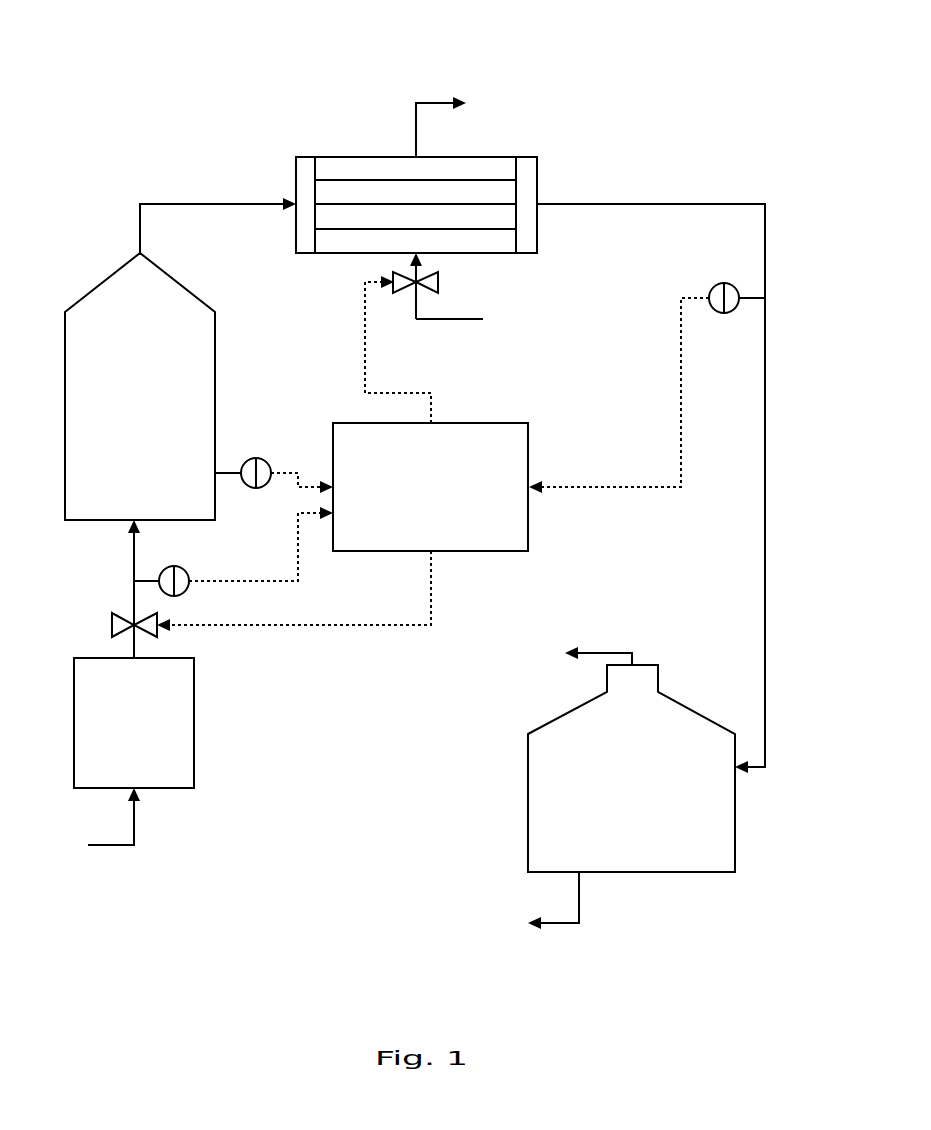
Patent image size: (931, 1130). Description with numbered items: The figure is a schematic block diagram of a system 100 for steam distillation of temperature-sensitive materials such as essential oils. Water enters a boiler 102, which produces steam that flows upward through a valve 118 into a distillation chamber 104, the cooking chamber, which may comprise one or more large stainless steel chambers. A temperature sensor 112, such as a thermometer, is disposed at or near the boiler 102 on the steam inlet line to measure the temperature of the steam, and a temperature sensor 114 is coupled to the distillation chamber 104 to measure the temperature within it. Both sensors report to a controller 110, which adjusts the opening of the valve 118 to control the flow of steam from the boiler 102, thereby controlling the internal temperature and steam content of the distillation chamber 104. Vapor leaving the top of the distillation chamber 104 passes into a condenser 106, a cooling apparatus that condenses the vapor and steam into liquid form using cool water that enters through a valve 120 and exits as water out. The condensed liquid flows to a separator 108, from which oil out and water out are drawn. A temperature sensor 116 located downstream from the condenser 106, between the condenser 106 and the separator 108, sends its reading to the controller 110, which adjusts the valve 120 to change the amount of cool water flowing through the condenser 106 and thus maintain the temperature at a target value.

The system for steam distillation 100 is at (90, 37).
The boiler 102 is at (185, 767).
The distillation chamber 104 is at (105, 312).
The condenser 106 is at (302, 170).
The separator 108 is at (705, 857).
The controller 110 is at (430, 487).
The temperature sensor 112 is at (178, 566).
The temperature sensor 114 is at (256, 458).
The temperature sensor 116 is at (724, 283).
The valve 118 is at (112, 613).
The valve 120 is at (438, 277).